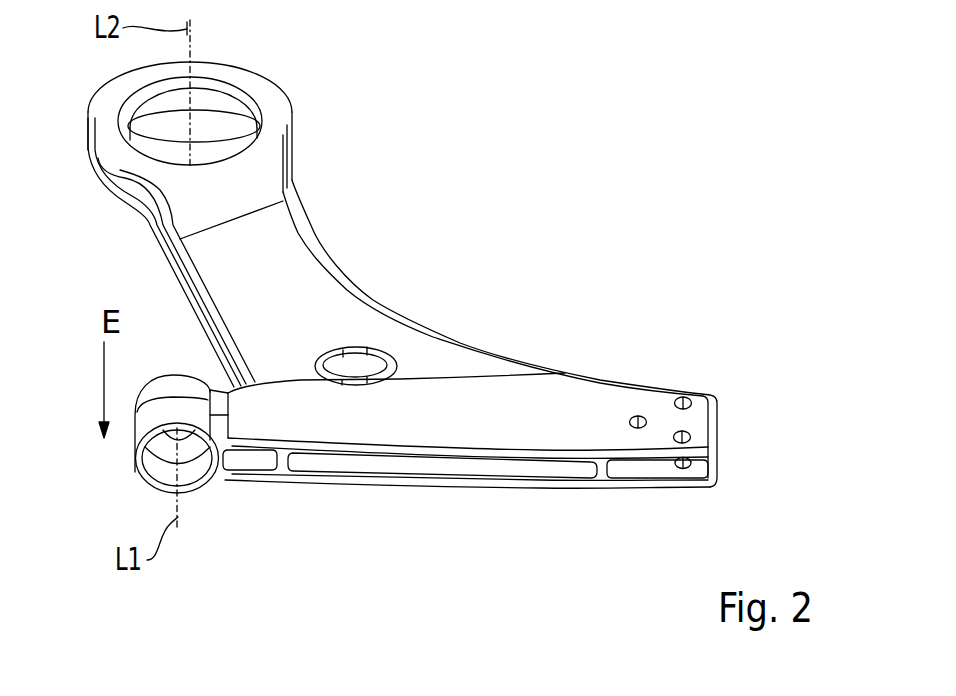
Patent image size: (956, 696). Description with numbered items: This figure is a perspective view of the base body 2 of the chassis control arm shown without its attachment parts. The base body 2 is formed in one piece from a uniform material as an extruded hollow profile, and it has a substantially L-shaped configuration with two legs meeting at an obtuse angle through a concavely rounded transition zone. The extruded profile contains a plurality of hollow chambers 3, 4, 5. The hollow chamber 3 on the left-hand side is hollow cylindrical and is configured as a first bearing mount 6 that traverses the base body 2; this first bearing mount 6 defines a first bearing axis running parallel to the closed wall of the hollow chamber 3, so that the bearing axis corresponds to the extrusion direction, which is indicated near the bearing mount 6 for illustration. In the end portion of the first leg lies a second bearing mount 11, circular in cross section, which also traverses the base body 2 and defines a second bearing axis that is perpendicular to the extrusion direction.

The base body 2 is at (328, 317).
The hollow chamber 3 is at (190, 476).
The hollow chamber 4 is at (251, 462).
The hollow chamber 5 is at (467, 468).
The first bearing mount 6 is at (135, 447).
The second bearing mount 11 is at (222, 88).